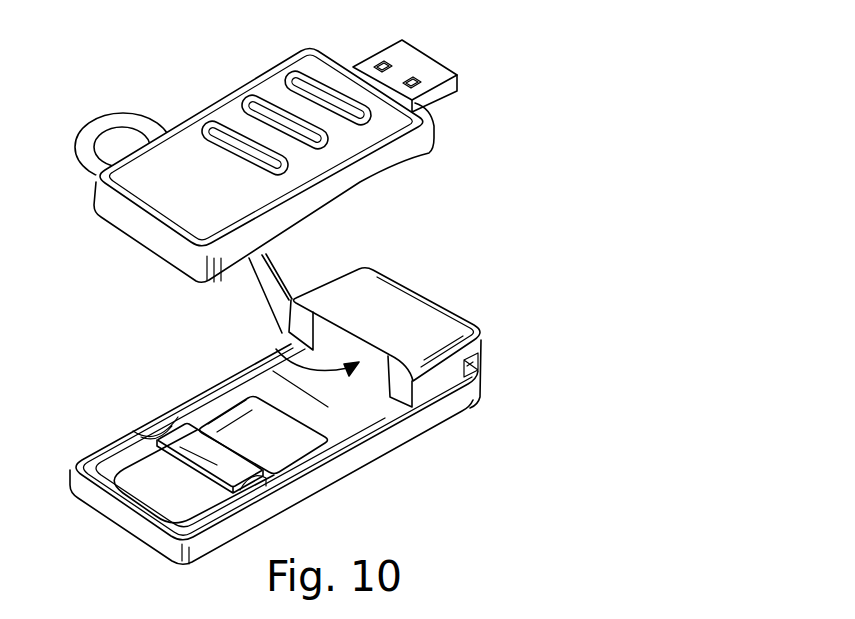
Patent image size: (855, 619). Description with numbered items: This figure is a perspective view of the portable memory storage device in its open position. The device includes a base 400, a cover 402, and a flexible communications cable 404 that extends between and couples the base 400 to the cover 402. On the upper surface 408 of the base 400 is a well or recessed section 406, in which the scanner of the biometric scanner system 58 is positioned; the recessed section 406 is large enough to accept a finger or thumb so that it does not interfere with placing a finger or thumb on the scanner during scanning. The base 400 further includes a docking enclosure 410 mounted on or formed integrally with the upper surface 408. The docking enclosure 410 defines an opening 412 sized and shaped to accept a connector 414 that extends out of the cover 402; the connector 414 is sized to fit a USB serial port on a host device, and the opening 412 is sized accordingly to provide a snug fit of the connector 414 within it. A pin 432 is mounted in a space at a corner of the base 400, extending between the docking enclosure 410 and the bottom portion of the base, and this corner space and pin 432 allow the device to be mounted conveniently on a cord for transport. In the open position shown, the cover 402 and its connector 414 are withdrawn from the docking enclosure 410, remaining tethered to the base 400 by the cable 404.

The base 400 is at (83, 500).
The cover 402 is at (90, 188).
The flexible communications cable 404 is at (277, 288).
The recessed section 406 is at (140, 493).
The upper surface 408 is at (348, 402).
The docking enclosure 410 is at (444, 378).
The opening 412 is at (270, 346).
The connector 414 is at (428, 63).
The pin 432 is at (470, 362).
The biometric scanner system 58 is at (200, 440).